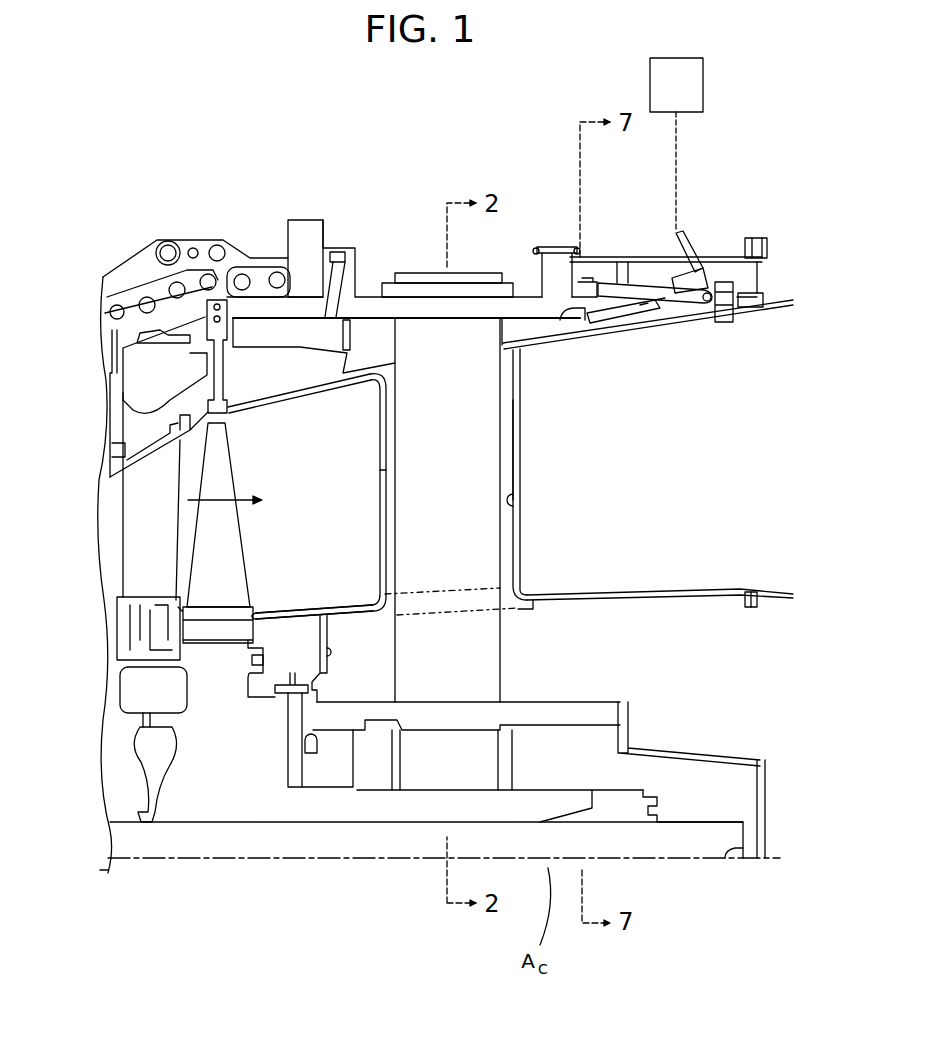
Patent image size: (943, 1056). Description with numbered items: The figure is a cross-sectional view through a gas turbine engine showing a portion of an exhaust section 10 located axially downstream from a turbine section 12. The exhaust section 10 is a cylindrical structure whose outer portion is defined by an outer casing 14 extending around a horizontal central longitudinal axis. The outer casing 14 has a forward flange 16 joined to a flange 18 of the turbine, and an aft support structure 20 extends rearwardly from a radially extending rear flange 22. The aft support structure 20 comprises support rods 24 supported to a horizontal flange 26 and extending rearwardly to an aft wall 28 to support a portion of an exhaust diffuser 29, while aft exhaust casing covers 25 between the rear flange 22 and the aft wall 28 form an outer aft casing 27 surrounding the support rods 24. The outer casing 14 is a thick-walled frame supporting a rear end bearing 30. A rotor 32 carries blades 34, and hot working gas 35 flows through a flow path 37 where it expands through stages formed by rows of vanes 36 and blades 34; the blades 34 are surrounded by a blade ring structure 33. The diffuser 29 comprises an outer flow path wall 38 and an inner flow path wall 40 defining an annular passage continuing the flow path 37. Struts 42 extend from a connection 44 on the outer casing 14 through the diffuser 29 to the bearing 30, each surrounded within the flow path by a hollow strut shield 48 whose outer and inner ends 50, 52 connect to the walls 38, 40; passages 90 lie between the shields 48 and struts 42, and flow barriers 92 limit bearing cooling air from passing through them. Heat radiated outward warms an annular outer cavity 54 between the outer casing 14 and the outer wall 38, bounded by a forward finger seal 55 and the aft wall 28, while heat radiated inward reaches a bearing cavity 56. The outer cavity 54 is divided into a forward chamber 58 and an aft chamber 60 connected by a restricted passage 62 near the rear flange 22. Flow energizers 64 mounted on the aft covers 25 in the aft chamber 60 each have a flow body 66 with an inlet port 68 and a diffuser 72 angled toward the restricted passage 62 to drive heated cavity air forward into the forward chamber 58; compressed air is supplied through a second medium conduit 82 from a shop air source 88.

The exhaust section 10 is at (303, 160).
The turbine section 12 is at (115, 268).
The outer casing 14 is at (532, 237).
The forward flange 16 is at (353, 248).
The turbine flange 18 is at (307, 240).
The aft support structure 20 is at (729, 234).
The rear flange 22 is at (556, 250).
The support rods 24 is at (667, 300).
The aft exhaust casing covers 25 is at (603, 257).
The horizontal flange 26 is at (617, 318).
The outer aft casing 27 is at (712, 257).
The aft wall 28 is at (757, 273).
The exhaust diffuser 29 is at (317, 382).
The rear end bearing 30 is at (395, 762).
The rotor 32 is at (200, 840).
The blade ring structure 33 is at (170, 413).
The blades 34 is at (222, 540).
The hot working gas 35 is at (232, 474).
The vanes 36 is at (135, 530).
The flow path 37 is at (175, 553).
The outer flow path wall 38 is at (548, 340).
The inner flow path wall 40 is at (612, 592).
The struts 42 is at (490, 465).
The connection 44 is at (388, 290).
The strut shield 48 is at (522, 497).
The outer end 50 is at (375, 395).
The inner end 52 is at (375, 602).
The annular outer cavity 54 is at (372, 348).
The forward finger seal 55 is at (345, 353).
The bearing cavity 56 is at (578, 672).
The forward chamber 58 is at (506, 332).
The aft chamber 60 is at (678, 308).
The restricted passage 62 is at (573, 327).
The flow energizers 64 is at (652, 303).
The flow body 66 is at (678, 275).
The inlet port 68 is at (715, 270).
The diffuser 72 is at (643, 313).
The second medium conduit 82 is at (663, 230).
The shop air source 88 is at (689, 96).
The passages 90 is at (378, 470).
The flow barriers 92 is at (522, 608).